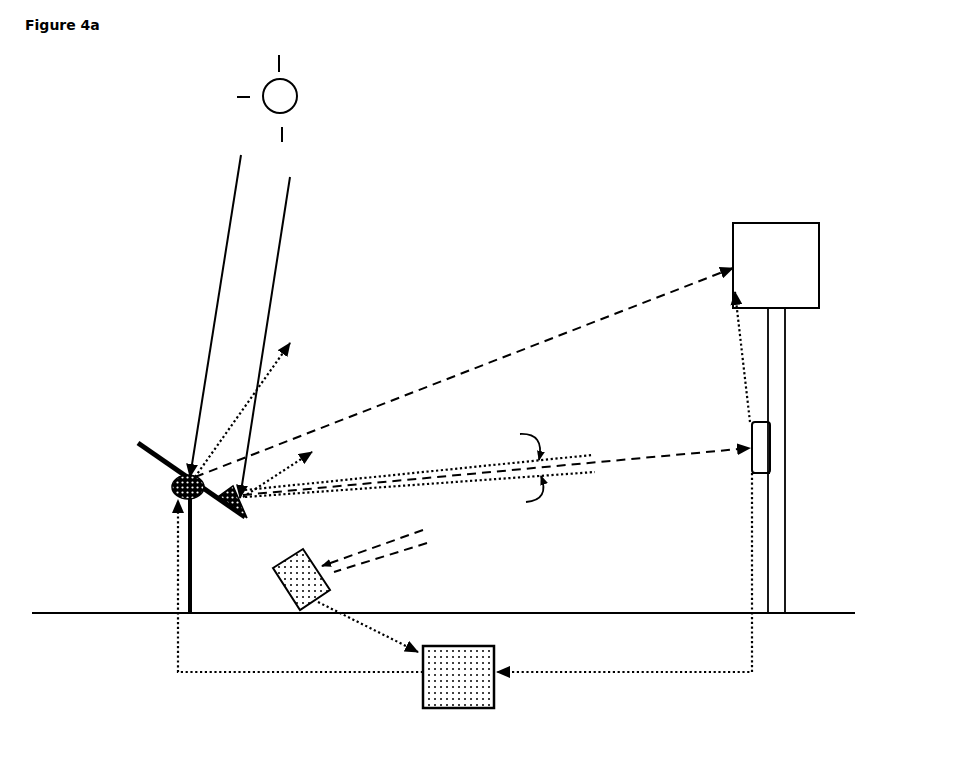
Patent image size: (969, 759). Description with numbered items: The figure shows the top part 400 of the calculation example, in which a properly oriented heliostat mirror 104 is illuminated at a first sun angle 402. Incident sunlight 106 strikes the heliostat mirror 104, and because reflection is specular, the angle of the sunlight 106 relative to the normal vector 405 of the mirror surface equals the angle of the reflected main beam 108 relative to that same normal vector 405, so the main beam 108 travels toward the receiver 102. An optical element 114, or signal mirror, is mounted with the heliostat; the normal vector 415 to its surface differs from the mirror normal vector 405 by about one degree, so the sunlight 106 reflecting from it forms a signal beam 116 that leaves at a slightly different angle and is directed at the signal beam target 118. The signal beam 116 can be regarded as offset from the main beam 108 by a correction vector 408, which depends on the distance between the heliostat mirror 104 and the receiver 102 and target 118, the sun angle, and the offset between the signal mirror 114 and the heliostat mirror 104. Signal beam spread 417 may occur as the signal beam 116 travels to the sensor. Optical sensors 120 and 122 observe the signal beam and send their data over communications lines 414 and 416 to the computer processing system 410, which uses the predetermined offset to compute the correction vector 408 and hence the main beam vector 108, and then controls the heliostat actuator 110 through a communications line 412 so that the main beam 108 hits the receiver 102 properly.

The receiver 102 is at (807, 213).
The heliostat mirror 104 is at (141, 435).
The incident sunlight 106 is at (207, 282).
The main beam 108 is at (498, 352).
The heliostat actuator 110 is at (167, 497).
The optical element 114 is at (250, 505).
The signal beam 116 is at (655, 467).
The signal beam target 118 is at (745, 433).
The optical sensor 120 is at (747, 472).
The optical sensor 122 is at (273, 580).
The top part of FIG. 4A 400 is at (820, 457).
The first sun angle 402 is at (308, 108).
The normal vector to the heliostat mirror surface 405 is at (285, 368).
The correction vector 408 is at (733, 367).
The computer processing system 410 is at (458, 677).
The network or communications line 412 is at (300, 600).
The network or communications line 414 is at (368, 627).
The normal vector to the optical element 415 is at (304, 464).
The network or communications line 416 is at (624, 572).
The signal beam spread 417 is at (420, 481).